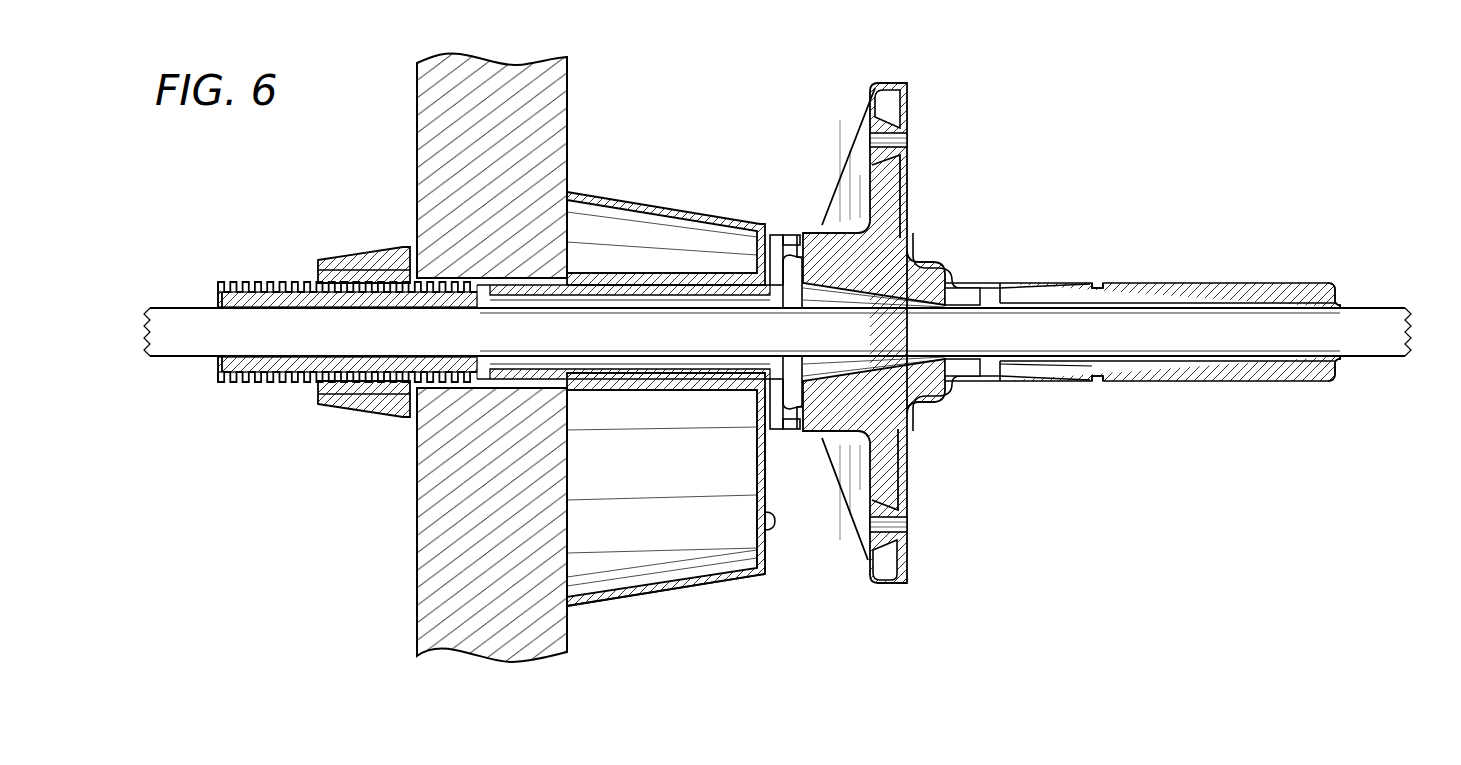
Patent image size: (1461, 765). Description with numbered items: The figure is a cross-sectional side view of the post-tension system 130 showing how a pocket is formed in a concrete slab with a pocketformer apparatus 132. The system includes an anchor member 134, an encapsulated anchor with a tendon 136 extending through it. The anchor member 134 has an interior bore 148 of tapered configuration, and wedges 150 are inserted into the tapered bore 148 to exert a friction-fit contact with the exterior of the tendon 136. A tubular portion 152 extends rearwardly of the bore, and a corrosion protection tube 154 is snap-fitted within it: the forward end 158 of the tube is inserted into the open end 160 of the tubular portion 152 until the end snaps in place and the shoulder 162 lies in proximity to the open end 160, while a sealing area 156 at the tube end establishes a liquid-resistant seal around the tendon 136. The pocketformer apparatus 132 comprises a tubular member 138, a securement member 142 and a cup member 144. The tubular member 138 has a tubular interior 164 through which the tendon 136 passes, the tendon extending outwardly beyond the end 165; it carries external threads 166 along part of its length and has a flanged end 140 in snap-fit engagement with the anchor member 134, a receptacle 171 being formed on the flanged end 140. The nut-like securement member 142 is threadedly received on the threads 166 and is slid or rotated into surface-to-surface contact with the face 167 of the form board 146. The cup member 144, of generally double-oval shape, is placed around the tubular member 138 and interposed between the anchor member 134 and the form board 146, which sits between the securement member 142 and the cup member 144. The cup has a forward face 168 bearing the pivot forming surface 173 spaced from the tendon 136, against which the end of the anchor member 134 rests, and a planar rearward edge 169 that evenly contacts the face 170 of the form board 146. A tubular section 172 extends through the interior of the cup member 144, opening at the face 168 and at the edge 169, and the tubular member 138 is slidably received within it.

The post-tension system 130 is at (1044, 182).
The pocketformer apparatus 132 is at (600, 203).
The anchor member 134 is at (912, 233).
The tendon 136 is at (1225, 322).
The tubular member 138 is at (287, 283).
The flanged end 140 is at (785, 240).
The securement member 142 is at (360, 252).
The cup member 144 is at (657, 594).
The form board 146 is at (568, 192).
The interior bore 148 is at (941, 262).
The wedges 150 is at (910, 368).
The tubular portion 152 is at (1010, 283).
The corrosion protection tube 154 is at (1190, 283).
The sealing area 156 is at (1332, 303).
The forward end 158 is at (987, 382).
The open end 160 is at (1097, 382).
The shoulder 162 is at (1105, 286).
The tubular interior 164 is at (218, 300).
The end 165 is at (218, 365).
The external threads 166 is at (290, 381).
The face 167 is at (413, 178).
The forward face 168 is at (767, 564).
The rearward edge 169 is at (572, 610).
The face 170 is at (571, 105).
The receptacle 171 is at (792, 430).
The tubular section 172 is at (607, 268).
The pivot forming surface 173 is at (773, 529).